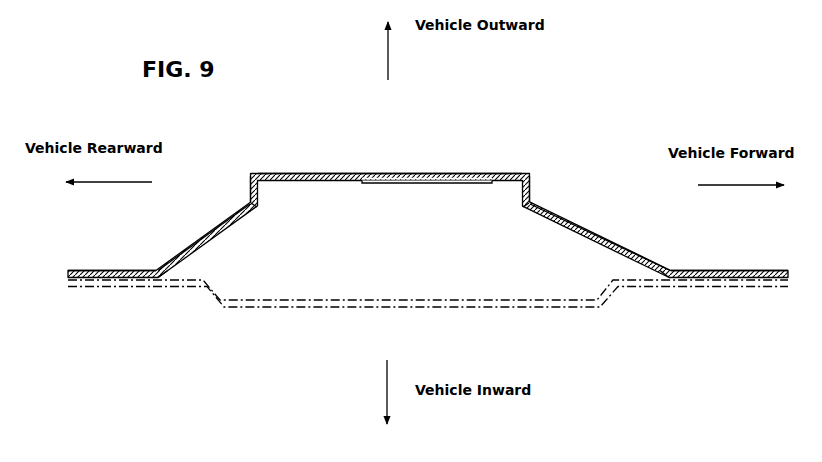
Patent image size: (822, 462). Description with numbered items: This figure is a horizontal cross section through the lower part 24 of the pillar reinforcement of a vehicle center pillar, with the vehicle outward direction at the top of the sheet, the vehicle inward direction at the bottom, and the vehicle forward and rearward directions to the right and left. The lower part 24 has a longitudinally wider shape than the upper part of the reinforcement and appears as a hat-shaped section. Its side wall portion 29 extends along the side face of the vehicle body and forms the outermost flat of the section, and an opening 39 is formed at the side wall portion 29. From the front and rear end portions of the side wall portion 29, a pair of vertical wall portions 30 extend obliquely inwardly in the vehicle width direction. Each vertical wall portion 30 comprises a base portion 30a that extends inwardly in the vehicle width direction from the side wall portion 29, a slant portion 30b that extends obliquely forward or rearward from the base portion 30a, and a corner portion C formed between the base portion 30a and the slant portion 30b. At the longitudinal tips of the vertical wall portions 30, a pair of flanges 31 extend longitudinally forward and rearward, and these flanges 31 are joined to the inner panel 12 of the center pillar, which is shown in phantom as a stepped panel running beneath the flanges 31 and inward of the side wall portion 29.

The inner panel 12 is at (343, 306).
The lower part 24 is at (563, 125).
The side wall portion 29 is at (326, 172).
The vertical wall portions 30 is at (196, 236).
The base portions 30a is at (251, 197).
The slant portions 30b is at (224, 237).
The flanges 31 is at (90, 269).
The opening 39 is at (446, 172).
The corner portions C is at (260, 206).